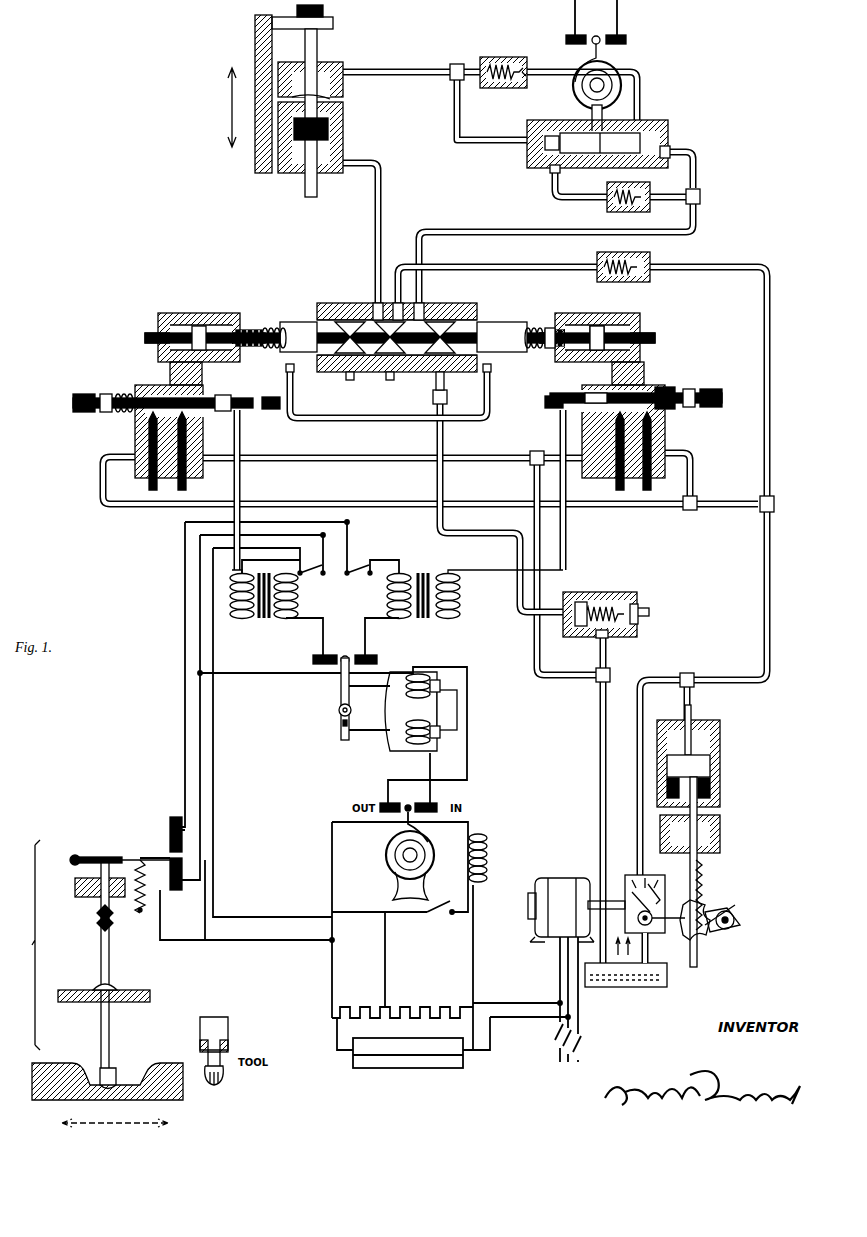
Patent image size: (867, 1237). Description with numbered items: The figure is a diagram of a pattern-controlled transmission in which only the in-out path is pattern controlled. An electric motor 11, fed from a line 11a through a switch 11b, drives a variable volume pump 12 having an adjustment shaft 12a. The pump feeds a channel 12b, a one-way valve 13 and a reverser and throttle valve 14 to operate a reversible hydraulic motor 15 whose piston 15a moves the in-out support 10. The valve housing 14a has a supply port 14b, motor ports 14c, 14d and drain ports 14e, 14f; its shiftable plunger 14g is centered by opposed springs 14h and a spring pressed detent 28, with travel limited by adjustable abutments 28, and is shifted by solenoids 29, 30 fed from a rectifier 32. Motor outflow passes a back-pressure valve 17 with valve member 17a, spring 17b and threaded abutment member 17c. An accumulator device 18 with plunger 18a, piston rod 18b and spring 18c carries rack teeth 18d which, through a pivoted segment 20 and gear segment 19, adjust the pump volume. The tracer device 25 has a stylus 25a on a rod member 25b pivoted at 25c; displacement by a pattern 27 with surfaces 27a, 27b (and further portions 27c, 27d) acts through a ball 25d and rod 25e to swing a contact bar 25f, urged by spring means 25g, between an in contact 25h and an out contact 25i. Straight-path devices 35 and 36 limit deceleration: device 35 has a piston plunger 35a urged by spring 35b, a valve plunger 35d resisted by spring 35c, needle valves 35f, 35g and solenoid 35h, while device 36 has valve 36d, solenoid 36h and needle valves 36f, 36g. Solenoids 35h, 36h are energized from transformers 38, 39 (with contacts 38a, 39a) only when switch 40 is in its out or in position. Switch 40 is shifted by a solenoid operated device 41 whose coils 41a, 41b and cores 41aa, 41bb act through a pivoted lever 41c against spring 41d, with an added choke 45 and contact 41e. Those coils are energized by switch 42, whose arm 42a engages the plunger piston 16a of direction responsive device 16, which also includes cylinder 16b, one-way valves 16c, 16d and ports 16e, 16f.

The in-out support 10 is at (255, 35).
The reversible hydraulic motor 15 is at (331, 63).
The piston 15a is at (343, 112).
The direction-responsive means 16 is at (652, 110).
The plunger piston 16a is at (540, 162).
The cylinder 16b is at (566, 134).
The one-way valve 16c is at (500, 57).
The one-way valve 16d is at (607, 206).
The port 16e is at (553, 175).
The port 16f is at (668, 160).
The switch 42 is at (612, 24).
The arm 42a is at (586, 101).
The one-way valve 13 is at (650, 280).
The reverser and throttle valve 14 is at (350, 303).
The housing 14a is at (490, 322).
The supply port 14b is at (392, 376).
The port 14c is at (356, 375).
The port 14d is at (437, 378).
The drain port 14e is at (358, 372).
The drain port 14f is at (447, 380).
The shiftable plunger 14g is at (315, 322).
The opposed springs 14h is at (250, 330).
The spring pressed detent / adjustable abutment 28 is at (320, 303).
The solenoid 29 is at (284, 328).
The solenoid 30 is at (528, 328).
The straight-path device for inward angles 36 is at (112, 292).
The valve plunger 36d is at (232, 386).
The solenoid 36h is at (256, 395).
The needle valve 36f is at (147, 440).
The needle valve 36g is at (188, 442).
The straight-path device for outward angles 35 is at (735, 400).
The piston plunger 35a is at (560, 330).
The spring 35b is at (600, 318).
The spring 35c is at (672, 387).
The valve plunger 35d is at (590, 393).
The solenoid 35h is at (552, 396).
The needle valve 35g is at (614, 440).
The needle valve 35f is at (653, 442).
The transformer 39 is at (264, 584).
The switch contact 39a is at (316, 578).
The transformer 38 is at (475, 584).
The switch contact 38a is at (358, 578).
The switch 40 is at (372, 652).
The solenoid operated device 41 is at (373, 736).
The coil 41a is at (420, 673).
The coil core 41aa is at (440, 686).
The coil 41b is at (428, 740).
The coil core 41bb is at (440, 728).
The pivoted lever 41c is at (341, 700).
The spring 41d is at (380, 722).
The switch 41e is at (437, 912).
The choke means 45 is at (487, 840).
The rectifier 32 is at (392, 1058).
The back-pressure valve 17 is at (622, 592).
The valve member 17a is at (580, 602).
The spring 17b is at (600, 638).
The threaded abutment member 17c is at (646, 620).
The channel 12b is at (765, 600).
The accumulator device 18 is at (722, 768).
The piston or plunger 18a is at (694, 760).
The piston rod 18b is at (700, 868).
The spring 18c is at (720, 790).
The rack teeth 18d is at (703, 886).
The gear segment 19 is at (682, 928).
The pivoted segment 20 is at (728, 930).
The electric motor 11 is at (560, 878).
The line 11a is at (580, 1056).
The switch 11b is at (580, 1032).
The variable volume pump 12 is at (634, 875).
The adjustment shaft 12a is at (658, 884).
The pattern controlled tracer device 25 is at (26, 945).
The stylus or feeler member 25a is at (118, 1070).
The shank or rod member 25b is at (110, 1038).
The pivot 25c is at (115, 988).
The ball 25d is at (100, 928).
The rod 25e is at (98, 898).
The pivoted contact carrying bar 25f is at (105, 857).
The spring means 25g is at (140, 912).
The in contact 25h is at (192, 890).
The out contact 25i is at (170, 822).
The pattern 27 is at (65, 1085).
The pattern surface 27a is at (150, 1062).
The pattern surface 27b is at (85, 1075).
The groove wall 27c is at (160, 1068).
The groove bottom 27d is at (160, 1095).